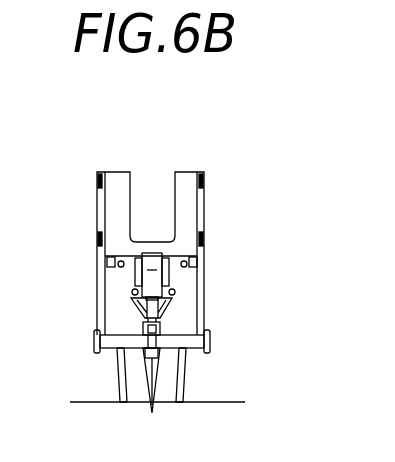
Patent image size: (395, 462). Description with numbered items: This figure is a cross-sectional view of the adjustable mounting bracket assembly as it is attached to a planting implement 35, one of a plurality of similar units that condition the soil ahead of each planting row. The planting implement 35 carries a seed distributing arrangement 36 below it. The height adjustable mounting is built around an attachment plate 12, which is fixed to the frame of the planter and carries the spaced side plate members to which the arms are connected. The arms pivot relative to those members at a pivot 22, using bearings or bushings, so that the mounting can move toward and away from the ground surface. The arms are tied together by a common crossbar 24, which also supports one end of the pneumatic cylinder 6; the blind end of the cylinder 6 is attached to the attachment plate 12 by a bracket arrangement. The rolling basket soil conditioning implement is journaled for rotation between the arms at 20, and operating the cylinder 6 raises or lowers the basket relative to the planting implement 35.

The planting implement 35 is at (146, 161).
The attachment plate 12 is at (107, 270).
The journal of the rolling basket between the arms 20 is at (167, 257).
The pneumatic cylinder 6 is at (157, 277).
The pivot 22 is at (147, 326).
The crossbar 24 is at (183, 343).
The seed distributing arrangement 36 is at (128, 362).